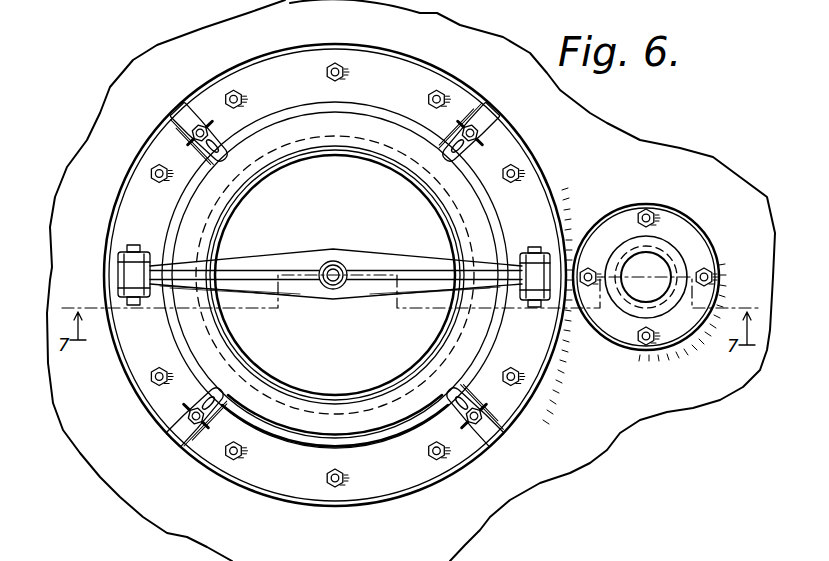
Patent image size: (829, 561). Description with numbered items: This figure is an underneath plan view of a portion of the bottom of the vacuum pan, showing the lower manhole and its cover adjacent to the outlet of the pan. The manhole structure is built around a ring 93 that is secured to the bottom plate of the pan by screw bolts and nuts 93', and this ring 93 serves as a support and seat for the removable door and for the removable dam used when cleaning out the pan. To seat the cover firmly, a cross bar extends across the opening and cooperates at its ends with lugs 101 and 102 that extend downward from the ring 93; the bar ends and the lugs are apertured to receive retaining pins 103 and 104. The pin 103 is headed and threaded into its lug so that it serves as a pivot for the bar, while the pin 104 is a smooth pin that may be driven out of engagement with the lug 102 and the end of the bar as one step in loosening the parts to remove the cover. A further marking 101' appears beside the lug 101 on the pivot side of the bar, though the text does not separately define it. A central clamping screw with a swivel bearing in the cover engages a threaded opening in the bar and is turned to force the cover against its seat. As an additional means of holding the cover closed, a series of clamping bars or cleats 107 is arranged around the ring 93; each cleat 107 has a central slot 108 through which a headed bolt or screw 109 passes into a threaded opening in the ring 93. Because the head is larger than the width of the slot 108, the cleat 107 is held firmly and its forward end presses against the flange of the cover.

The ring 93 is at (348, 275).
The screw bolts and nuts 93' is at (337, 298).
The lug 101 is at (528, 320).
The pivot pin 101' is at (530, 229).
The lug 102 is at (146, 252).
The retaining pin 103 is at (542, 252).
The retaining pin 104 is at (130, 308).
The clamping bar or cleat 107 is at (226, 157).
The central slot 108 is at (462, 128).
The headed bolt or screw 109 is at (183, 122).